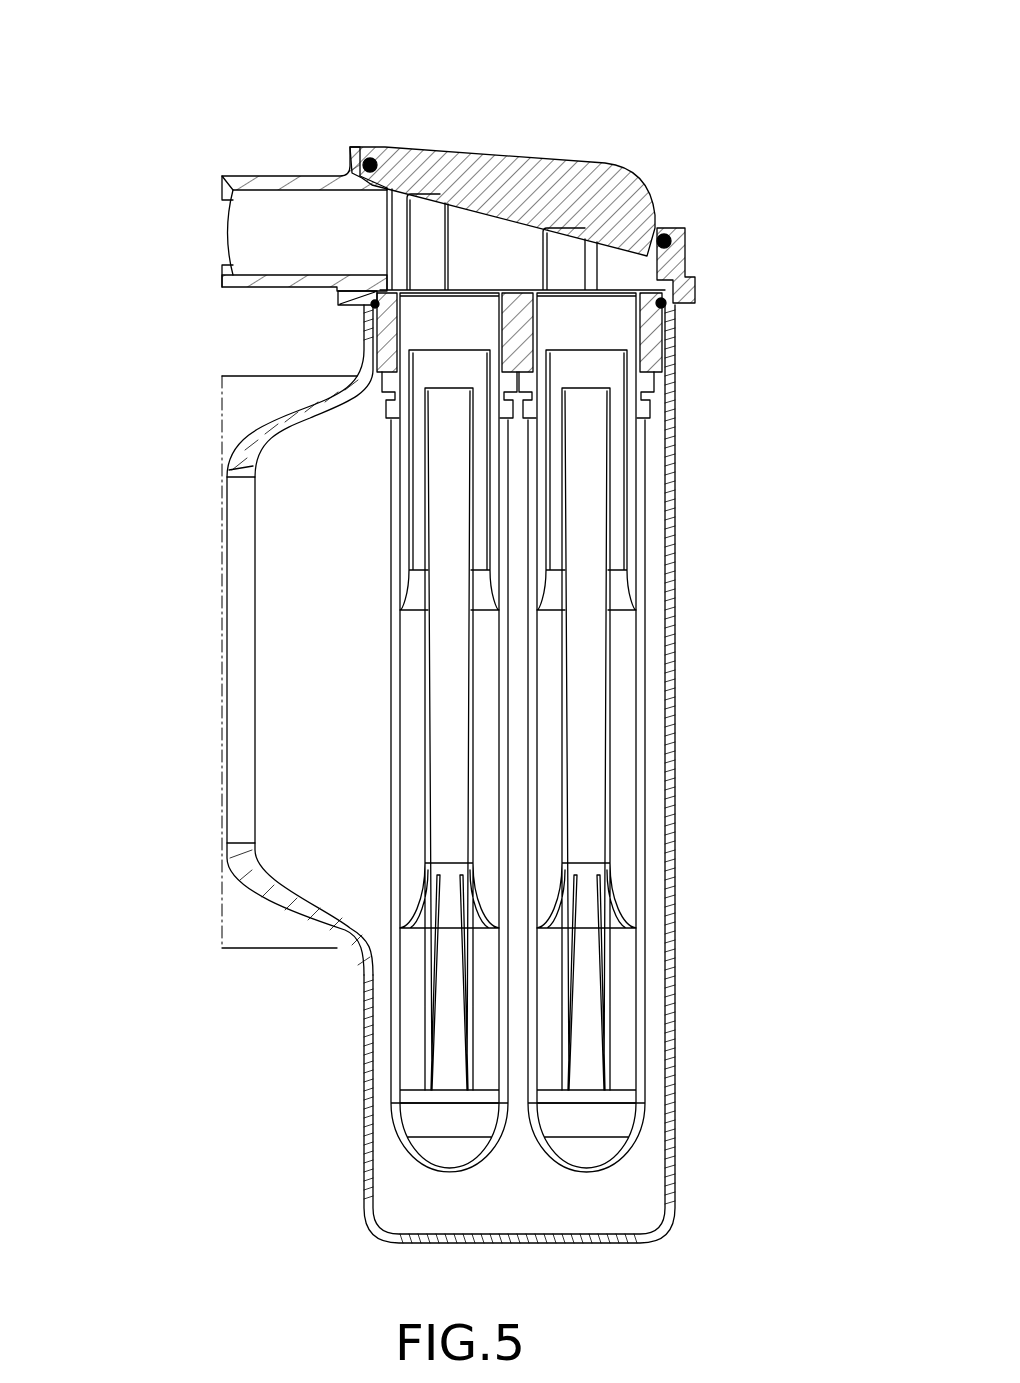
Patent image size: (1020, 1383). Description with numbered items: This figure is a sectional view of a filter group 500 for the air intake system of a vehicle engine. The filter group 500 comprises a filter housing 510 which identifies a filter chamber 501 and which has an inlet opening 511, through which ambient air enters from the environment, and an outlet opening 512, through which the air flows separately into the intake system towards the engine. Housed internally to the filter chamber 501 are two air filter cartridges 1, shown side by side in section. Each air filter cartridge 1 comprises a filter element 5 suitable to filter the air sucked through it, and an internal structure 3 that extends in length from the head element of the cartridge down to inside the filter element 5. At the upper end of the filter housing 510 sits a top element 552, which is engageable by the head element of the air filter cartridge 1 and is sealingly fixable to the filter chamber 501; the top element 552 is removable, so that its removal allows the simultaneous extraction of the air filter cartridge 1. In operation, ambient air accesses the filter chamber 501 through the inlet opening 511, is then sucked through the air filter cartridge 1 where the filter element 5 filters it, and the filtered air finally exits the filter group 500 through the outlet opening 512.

The filter group 500 is at (498, 102).
The filter housing 510 is at (727, 929).
The inlet opening 511 is at (241, 797).
The outlet opening 512 is at (285, 237).
The top element 552 is at (660, 183).
The filter chamber 501 is at (363, 873).
The air filter cartridge 1 is at (510, 600).
The internal structure 3 is at (413, 792).
The filter element 5 is at (505, 769).